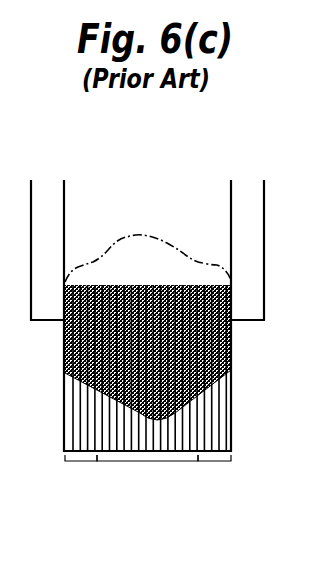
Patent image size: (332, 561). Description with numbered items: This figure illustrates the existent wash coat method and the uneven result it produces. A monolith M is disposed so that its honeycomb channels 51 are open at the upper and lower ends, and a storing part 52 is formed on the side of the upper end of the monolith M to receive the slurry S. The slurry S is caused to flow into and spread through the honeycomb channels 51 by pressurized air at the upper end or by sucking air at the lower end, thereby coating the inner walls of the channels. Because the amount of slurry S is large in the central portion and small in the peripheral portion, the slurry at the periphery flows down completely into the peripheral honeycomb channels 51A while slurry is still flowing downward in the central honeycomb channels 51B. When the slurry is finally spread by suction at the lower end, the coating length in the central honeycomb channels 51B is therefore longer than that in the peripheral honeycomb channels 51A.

The storing part 52 is at (182, 202).
The slurry S is at (138, 278).
The monolith M is at (63, 337).
The honeycomb channels 51 is at (220, 447).
The honeycomb channels at the peripheral portion 51A is at (138, 471).
The honeycomb channels at the central portion 51B is at (147, 471).